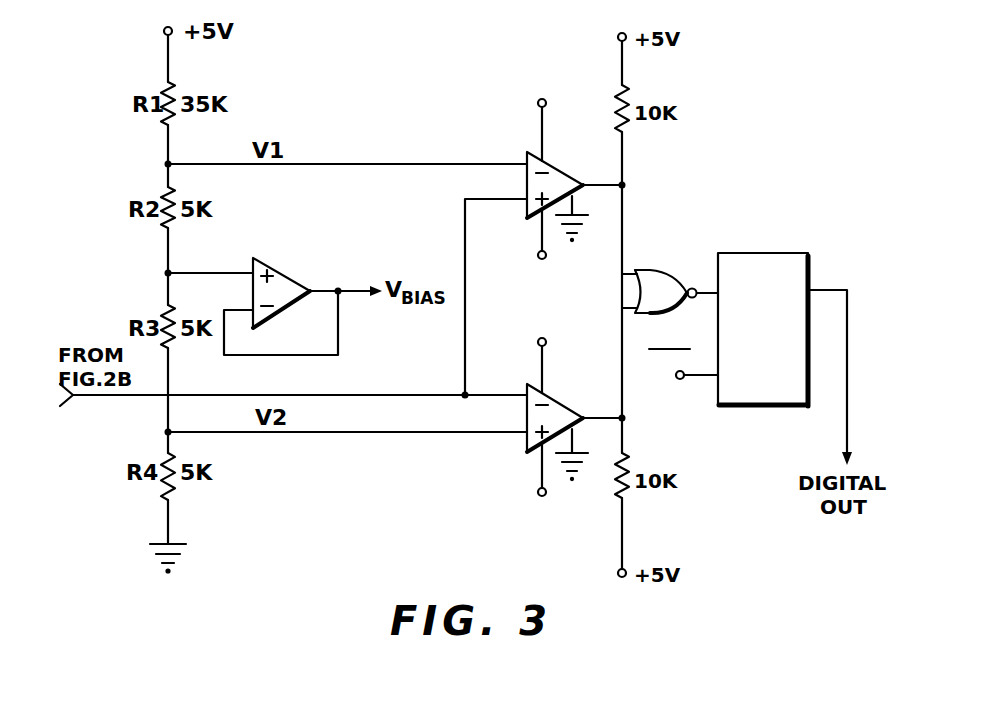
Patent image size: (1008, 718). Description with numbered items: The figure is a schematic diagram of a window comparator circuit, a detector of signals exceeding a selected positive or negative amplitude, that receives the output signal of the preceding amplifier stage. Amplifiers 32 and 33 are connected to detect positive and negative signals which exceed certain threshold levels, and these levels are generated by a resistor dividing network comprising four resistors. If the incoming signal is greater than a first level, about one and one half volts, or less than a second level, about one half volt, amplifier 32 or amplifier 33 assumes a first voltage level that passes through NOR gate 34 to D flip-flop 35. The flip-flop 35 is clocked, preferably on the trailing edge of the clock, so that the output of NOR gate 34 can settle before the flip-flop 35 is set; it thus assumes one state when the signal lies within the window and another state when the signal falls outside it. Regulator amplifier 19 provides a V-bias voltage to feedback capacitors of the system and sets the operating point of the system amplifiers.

The regulator amplifier 19 is at (289, 274).
The amplifier 32 is at (566, 167).
The amplifier 33 is at (565, 399).
The NOR gate 34 is at (688, 256).
The D flip-flop 35 is at (797, 236).